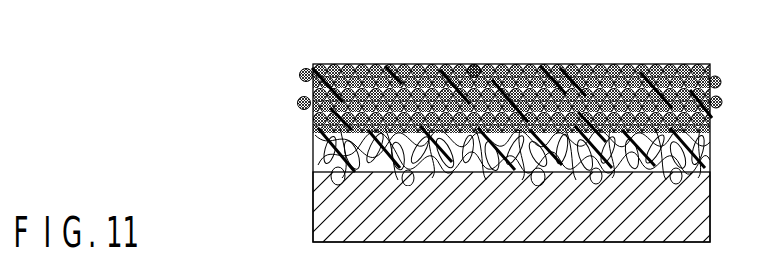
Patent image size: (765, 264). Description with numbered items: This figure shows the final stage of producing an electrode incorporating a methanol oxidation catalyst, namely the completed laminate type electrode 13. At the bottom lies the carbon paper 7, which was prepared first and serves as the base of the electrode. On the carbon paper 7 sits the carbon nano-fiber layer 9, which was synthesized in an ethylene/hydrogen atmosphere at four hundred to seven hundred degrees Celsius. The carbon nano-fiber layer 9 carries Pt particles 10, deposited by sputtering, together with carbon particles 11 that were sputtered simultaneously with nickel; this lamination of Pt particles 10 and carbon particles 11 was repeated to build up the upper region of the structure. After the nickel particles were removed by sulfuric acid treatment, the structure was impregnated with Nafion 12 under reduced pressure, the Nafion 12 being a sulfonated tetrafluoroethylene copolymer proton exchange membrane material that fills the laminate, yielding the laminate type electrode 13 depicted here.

The carbon paper 7 is at (313, 213).
The carbon nano-fiber layer 9 is at (306, 163).
The Pt particles 10 is at (474, 63).
The carbon particles 11 is at (698, 63).
The Nafion 12 is at (543, 63).
The laminate type electrode 13 is at (272, 79).